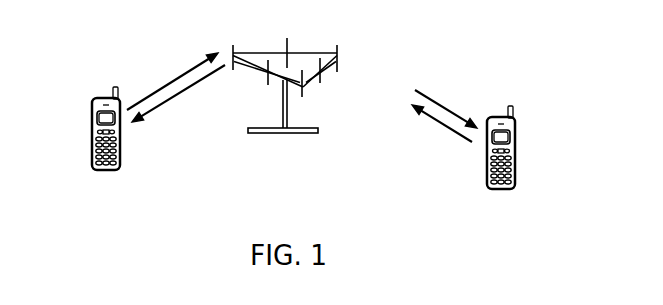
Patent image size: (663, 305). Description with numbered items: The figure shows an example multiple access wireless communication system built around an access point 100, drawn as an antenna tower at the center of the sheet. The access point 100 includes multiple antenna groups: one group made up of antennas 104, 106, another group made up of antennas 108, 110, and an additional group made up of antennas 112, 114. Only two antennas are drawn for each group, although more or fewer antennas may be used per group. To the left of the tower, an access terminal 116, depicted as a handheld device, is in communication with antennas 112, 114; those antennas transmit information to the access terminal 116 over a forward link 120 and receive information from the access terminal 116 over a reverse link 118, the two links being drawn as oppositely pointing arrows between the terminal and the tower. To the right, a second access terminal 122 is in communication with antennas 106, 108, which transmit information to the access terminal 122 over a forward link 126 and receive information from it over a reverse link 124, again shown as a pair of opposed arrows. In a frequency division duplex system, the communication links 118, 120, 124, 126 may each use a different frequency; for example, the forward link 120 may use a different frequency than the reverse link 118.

The access point 100 is at (286, 134).
The antenna 104 is at (303, 95).
The antenna 106 is at (322, 80).
The antenna 108 is at (340, 66).
The antenna 110 is at (288, 40).
The antenna 112 is at (233, 46).
The antenna 114 is at (268, 80).
The access terminal 116 is at (92, 116).
The reverse link 118 is at (178, 77).
The forward link 120 is at (170, 98).
The access terminal 122 is at (516, 131).
The reverse link 124 is at (450, 127).
The forward link 126 is at (443, 108).